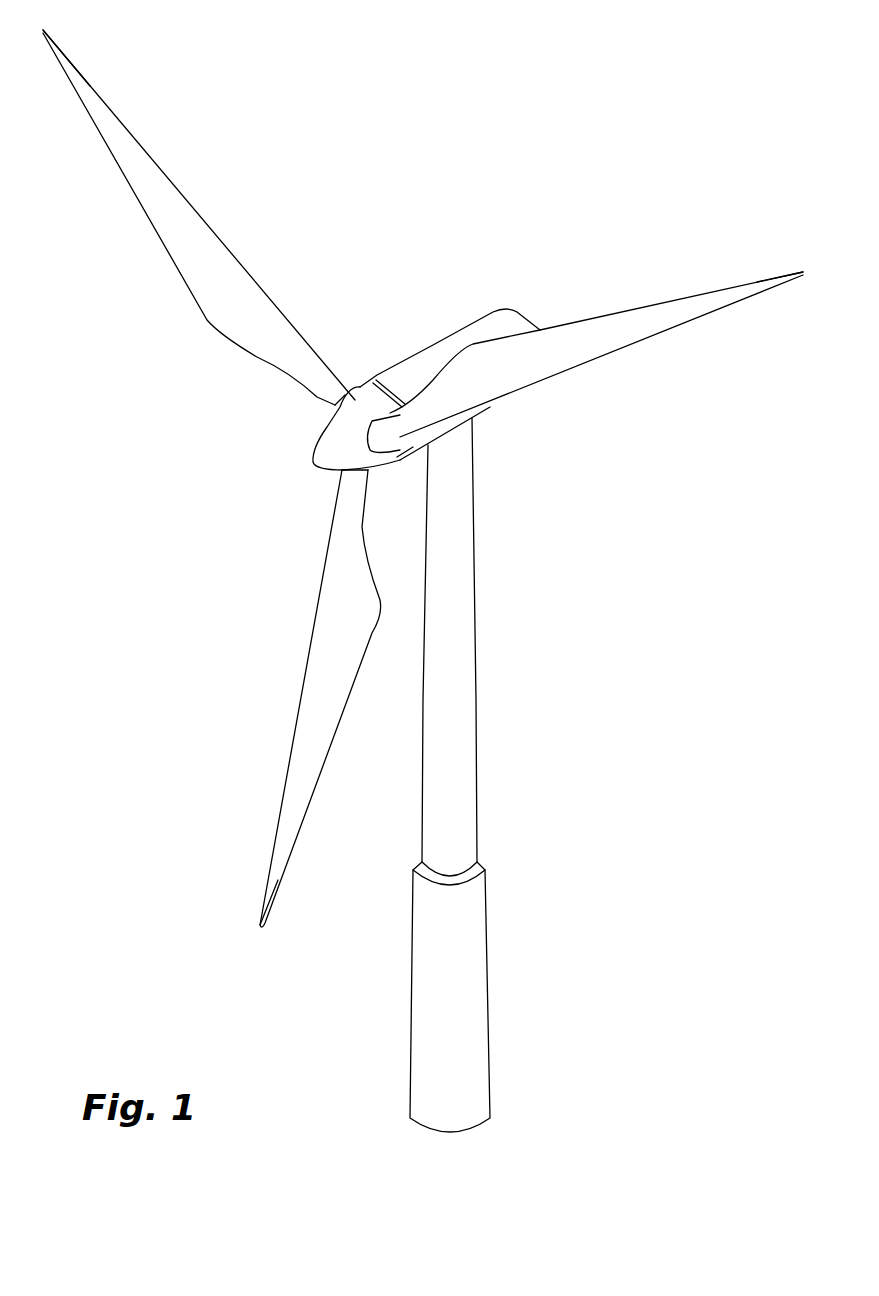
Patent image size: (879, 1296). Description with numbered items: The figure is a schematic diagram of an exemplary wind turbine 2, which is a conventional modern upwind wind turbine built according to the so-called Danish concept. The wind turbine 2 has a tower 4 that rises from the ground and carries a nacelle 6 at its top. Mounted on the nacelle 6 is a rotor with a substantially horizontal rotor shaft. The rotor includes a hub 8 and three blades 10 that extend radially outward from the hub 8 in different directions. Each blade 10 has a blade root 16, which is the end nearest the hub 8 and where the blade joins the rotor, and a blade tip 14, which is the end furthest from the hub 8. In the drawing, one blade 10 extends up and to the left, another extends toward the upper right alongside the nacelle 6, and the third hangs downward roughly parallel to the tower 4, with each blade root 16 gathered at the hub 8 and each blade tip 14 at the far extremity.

The wind turbine 2 is at (567, 717).
The tower 4 is at (467, 645).
The nacelle 6 is at (415, 367).
The hub 8 is at (330, 447).
The blade 10 is at (227, 307).
The blade tip 14 is at (88, 85).
The blade root 16 is at (333, 412).